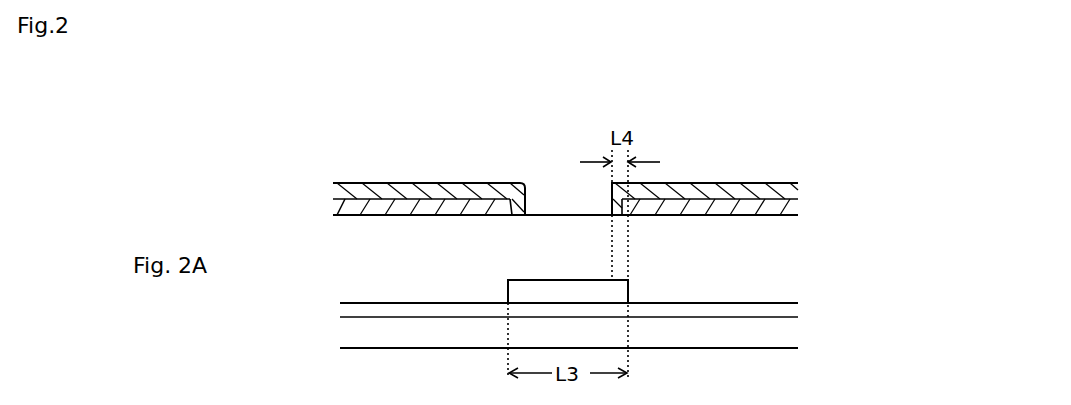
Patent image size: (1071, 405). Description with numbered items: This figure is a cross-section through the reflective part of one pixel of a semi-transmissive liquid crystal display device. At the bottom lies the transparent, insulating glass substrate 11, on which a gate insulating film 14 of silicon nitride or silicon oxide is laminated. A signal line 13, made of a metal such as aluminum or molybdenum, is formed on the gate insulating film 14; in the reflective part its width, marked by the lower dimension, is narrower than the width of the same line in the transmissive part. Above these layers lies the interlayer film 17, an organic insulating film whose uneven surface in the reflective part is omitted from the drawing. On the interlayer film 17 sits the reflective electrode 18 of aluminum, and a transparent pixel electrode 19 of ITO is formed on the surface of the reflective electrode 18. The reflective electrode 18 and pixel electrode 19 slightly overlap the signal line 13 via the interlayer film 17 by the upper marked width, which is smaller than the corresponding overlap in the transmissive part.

The glass substrate 11 is at (784, 333).
The signal line 13 is at (525, 295).
The gate insulating film 14 is at (792, 307).
The interlayer film 17 is at (740, 278).
The reflective electrode 18 is at (735, 197).
The pixel electrode 19 is at (793, 196).